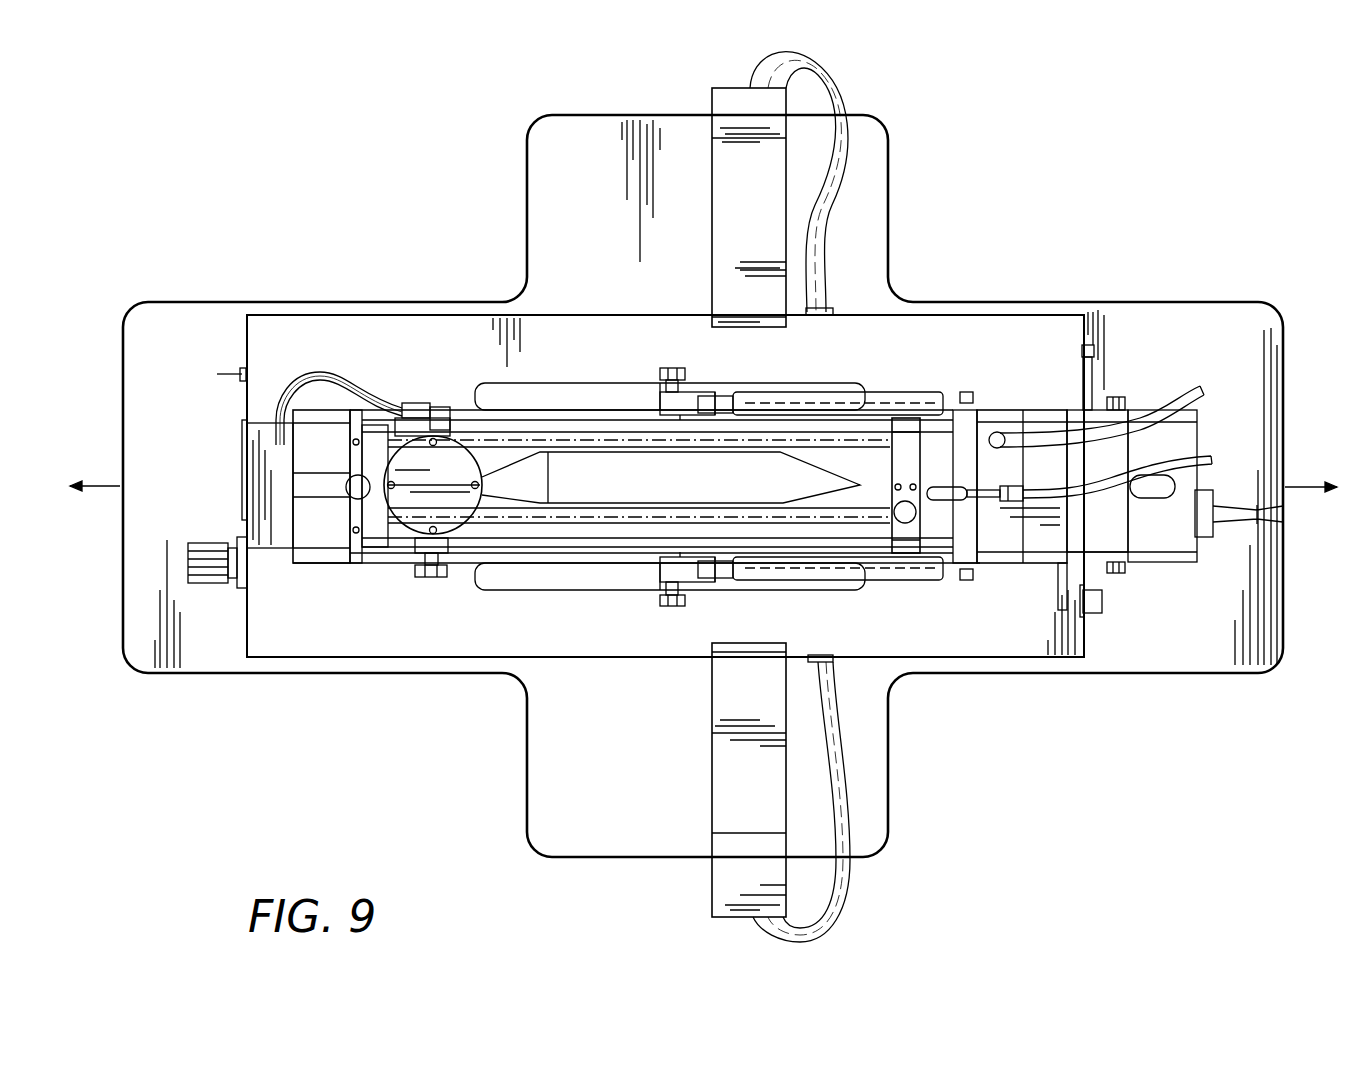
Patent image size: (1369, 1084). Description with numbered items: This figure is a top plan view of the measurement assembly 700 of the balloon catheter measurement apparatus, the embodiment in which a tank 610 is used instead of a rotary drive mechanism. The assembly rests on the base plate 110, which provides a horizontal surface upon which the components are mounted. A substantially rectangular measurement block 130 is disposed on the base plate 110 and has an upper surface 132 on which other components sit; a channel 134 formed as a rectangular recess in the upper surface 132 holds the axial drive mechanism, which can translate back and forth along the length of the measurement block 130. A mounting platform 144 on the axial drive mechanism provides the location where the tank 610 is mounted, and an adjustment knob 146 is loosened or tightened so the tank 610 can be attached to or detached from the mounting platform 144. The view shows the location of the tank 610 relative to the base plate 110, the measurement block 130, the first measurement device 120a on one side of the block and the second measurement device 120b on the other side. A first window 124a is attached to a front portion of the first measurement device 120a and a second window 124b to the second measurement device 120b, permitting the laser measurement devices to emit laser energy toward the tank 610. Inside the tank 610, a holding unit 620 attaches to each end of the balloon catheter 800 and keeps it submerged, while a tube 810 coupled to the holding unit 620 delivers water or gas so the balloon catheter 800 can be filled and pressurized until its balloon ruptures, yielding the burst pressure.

The measurement assembly 700 is at (998, 185).
The base plate 110 is at (210, 652).
The measurement block 130 is at (322, 657).
The upper surface 132 is at (418, 643).
The channel 134 is at (265, 490).
The mounting platform 144 is at (535, 575).
The adjustment knob 146 is at (672, 368).
The first measurement device 120a is at (723, 167).
The second measurement device 120b is at (722, 812).
The first window 124a is at (712, 325).
The second window 124b is at (712, 648).
The holding unit 620 is at (423, 463).
The tank 610 is at (1028, 413).
The balloon catheter 800 is at (800, 475).
The tube 810 is at (1200, 456).